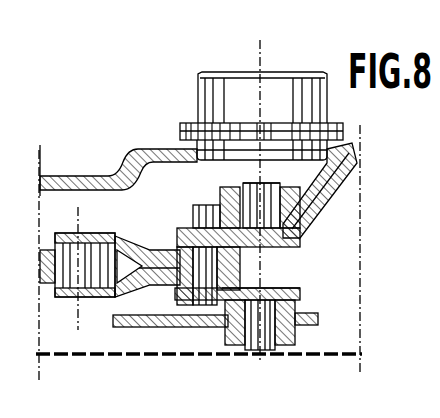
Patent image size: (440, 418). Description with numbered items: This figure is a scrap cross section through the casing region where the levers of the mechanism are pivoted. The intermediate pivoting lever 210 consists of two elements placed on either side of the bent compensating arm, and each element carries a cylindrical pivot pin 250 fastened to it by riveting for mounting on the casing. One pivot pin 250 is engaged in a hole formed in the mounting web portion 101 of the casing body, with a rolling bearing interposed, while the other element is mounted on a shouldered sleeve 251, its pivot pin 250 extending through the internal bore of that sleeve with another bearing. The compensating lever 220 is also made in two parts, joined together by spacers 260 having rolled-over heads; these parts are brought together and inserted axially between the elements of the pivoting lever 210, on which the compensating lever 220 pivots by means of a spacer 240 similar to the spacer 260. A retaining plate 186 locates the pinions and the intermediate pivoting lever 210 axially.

The mounting web portion 101 is at (332, 190).
The retaining plate 186 is at (313, 328).
The intermediate pivoting lever 210 is at (313, 192).
The compensating lever 220 is at (136, 285).
The spacer 240 is at (203, 223).
The cylindrical pivot pin 250 is at (283, 252).
The shouldered sleeve 251 is at (156, 285).
The spacer 260 is at (96, 231).